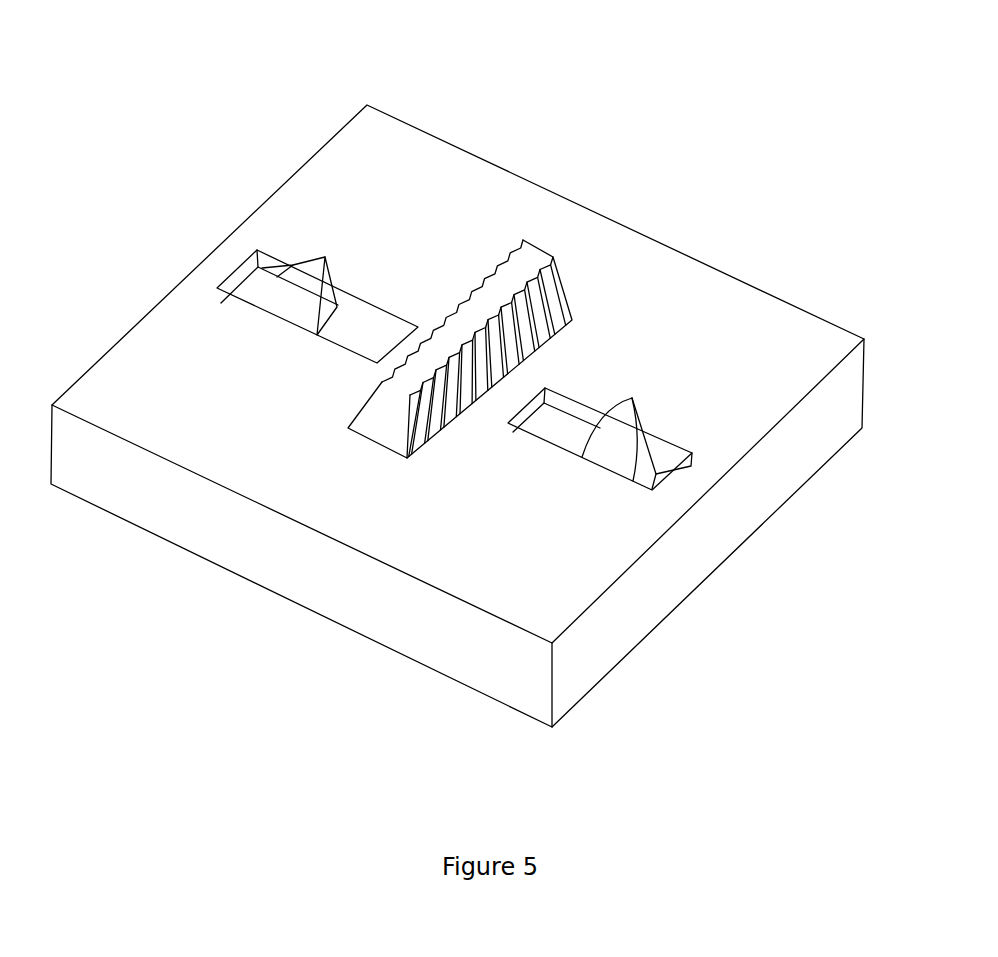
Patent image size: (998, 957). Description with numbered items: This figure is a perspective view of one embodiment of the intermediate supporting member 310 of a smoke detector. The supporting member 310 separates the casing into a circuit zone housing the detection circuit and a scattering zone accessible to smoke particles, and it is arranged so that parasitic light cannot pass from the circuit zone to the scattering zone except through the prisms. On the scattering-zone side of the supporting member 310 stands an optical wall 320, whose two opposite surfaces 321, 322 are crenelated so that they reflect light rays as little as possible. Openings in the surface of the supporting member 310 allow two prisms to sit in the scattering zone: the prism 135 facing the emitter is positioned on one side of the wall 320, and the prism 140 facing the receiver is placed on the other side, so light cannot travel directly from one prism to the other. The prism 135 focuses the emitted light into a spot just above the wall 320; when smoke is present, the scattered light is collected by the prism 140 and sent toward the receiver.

The intermediate supporting member 310 is at (526, 163).
The prism 135 is at (295, 295).
The prism 140 is at (643, 442).
The optical wall 320 is at (529, 414).
The surface 321 is at (470, 423).
The surface 322 is at (476, 284).